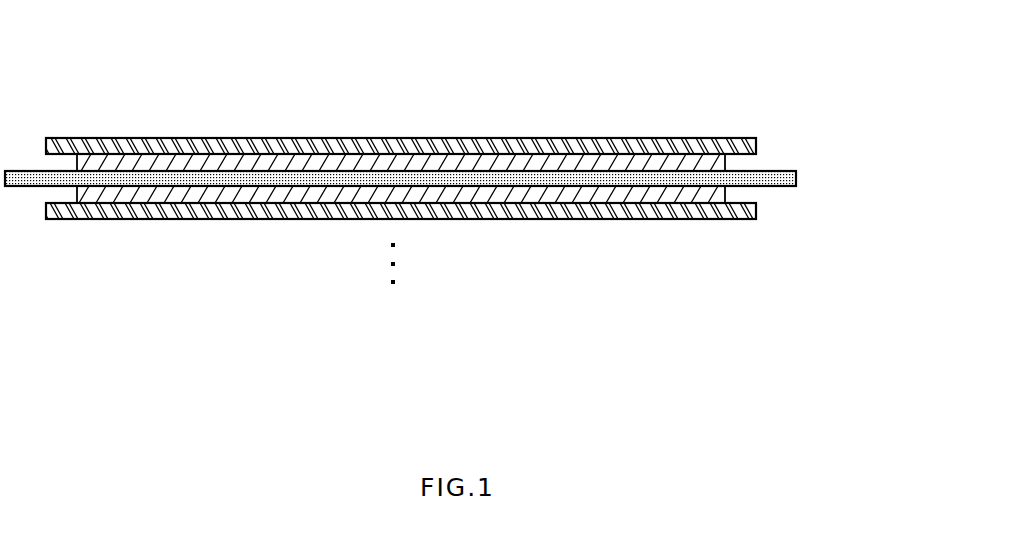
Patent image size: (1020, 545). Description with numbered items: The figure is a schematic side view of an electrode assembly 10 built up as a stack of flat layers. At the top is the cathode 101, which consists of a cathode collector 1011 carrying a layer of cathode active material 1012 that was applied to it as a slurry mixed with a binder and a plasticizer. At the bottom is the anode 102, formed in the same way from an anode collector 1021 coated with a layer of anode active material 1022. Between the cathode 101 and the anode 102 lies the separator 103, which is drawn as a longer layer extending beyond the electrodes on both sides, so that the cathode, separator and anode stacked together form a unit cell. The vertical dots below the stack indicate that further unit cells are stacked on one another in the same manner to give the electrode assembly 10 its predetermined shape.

The electrode assembly 10 is at (449, 82).
The cathode 101 is at (857, 116).
The cathode collector 1011 is at (752, 144).
The cathode active material 1012 is at (723, 163).
The anode 102 is at (858, 199).
The anode collector 1021 is at (750, 210).
The anode active material 1022 is at (723, 193).
The separator 103 is at (797, 178).